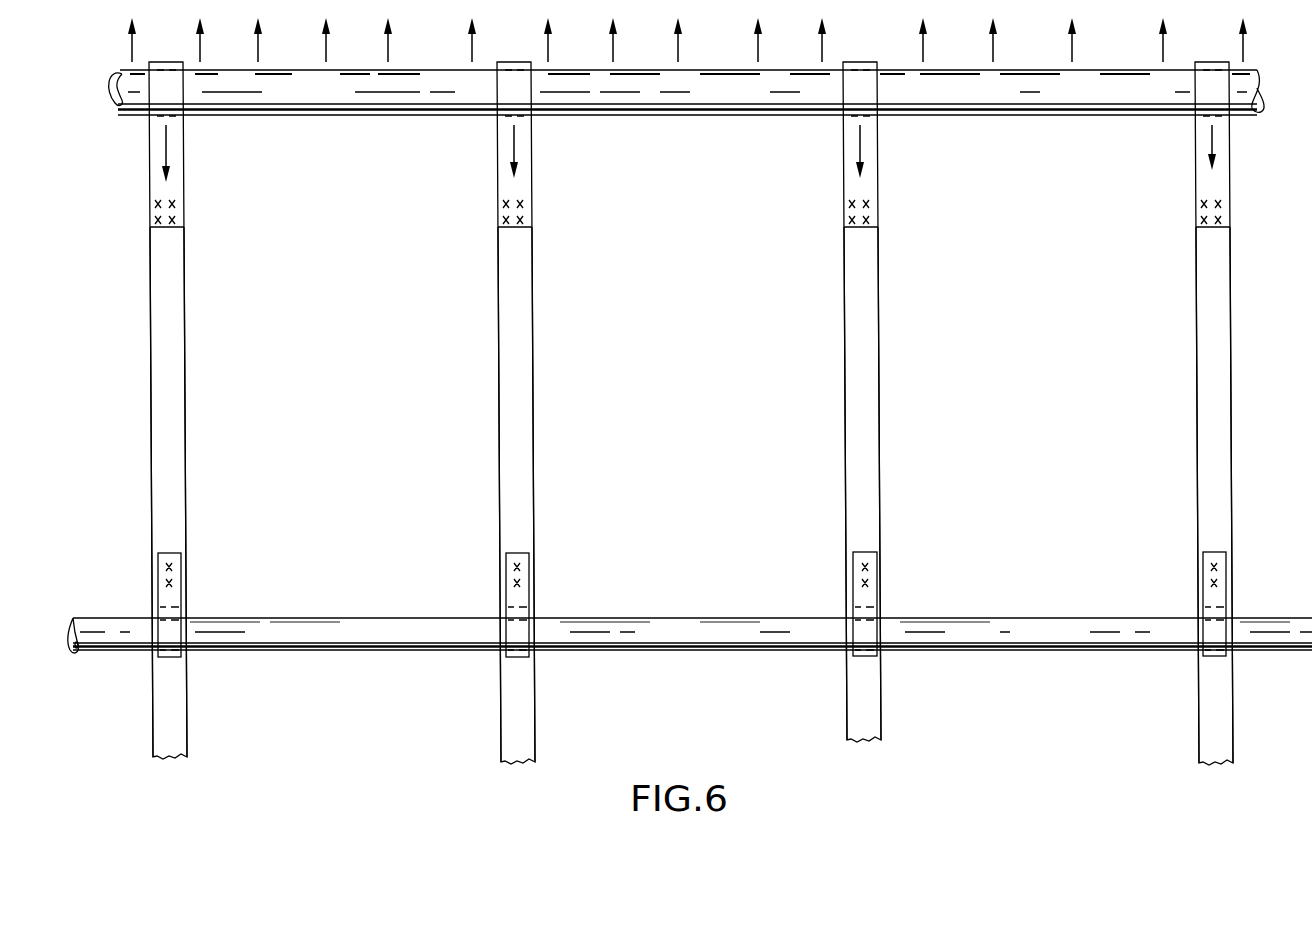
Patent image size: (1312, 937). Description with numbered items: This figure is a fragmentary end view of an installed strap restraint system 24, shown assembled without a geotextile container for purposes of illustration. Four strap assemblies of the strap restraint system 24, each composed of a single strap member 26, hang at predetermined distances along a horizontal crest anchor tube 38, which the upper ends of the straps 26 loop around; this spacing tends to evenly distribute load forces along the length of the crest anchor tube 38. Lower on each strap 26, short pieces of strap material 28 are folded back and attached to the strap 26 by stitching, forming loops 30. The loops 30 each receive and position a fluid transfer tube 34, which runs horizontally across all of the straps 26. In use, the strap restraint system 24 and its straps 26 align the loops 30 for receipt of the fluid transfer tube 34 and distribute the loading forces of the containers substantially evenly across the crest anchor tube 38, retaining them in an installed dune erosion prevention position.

The strap restraint system 24 is at (187, 390).
The strap member 26 is at (172, 283).
The short pieces of strap material 28 is at (1220, 593).
The loops 30 is at (1212, 630).
The fluid transfer tube 34 is at (1030, 645).
The crest anchor tube 38 is at (686, 92).